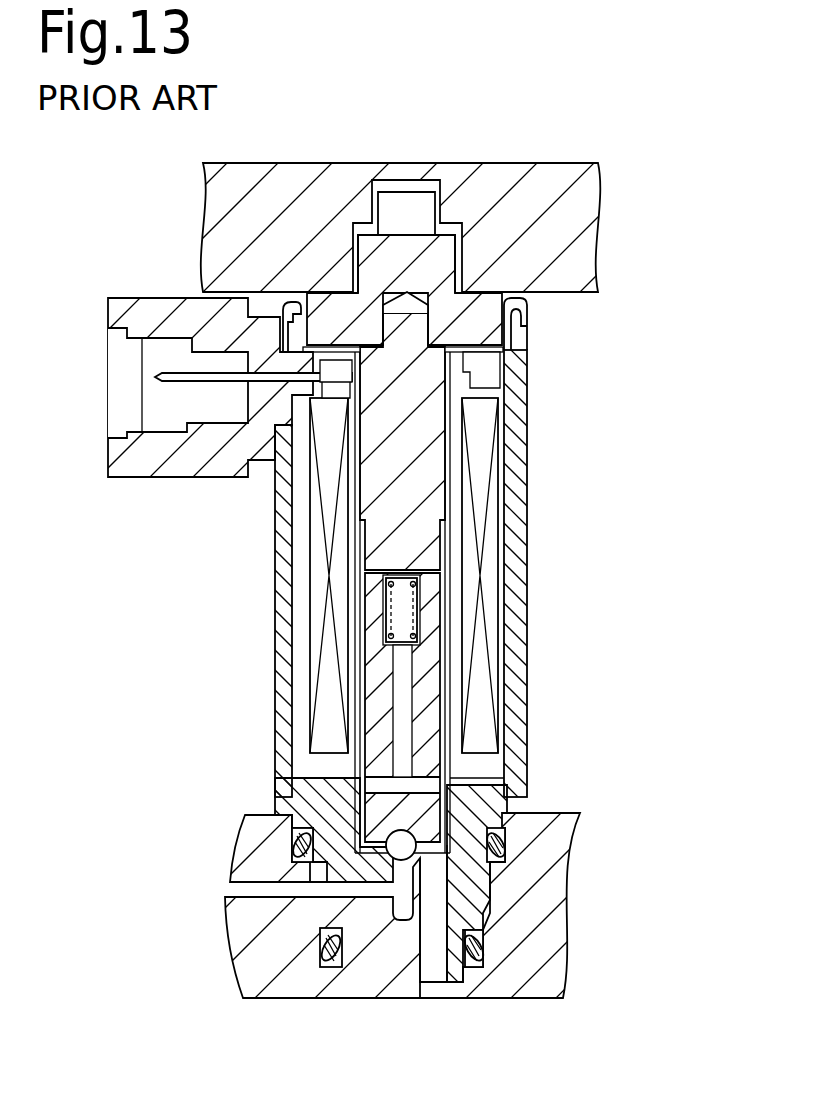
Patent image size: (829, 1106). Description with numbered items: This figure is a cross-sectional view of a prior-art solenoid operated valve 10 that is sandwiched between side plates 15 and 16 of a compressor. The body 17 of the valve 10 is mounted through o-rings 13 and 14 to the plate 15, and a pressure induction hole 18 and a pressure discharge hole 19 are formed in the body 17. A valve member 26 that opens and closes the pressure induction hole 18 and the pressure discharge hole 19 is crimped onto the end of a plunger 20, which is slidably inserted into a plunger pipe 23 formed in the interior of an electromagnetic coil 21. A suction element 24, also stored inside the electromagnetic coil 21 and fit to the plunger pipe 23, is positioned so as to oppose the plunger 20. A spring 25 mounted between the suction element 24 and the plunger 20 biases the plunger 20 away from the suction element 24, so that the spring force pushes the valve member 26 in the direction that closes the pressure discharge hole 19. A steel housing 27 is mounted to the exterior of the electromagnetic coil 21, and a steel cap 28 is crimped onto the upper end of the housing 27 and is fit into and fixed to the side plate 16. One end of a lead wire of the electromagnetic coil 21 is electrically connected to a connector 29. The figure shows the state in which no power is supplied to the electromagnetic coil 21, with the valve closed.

The solenoid operated valve 10 is at (618, 556).
The o-ring 13 is at (497, 840).
The o-ring 14 is at (475, 942).
The side plate 15 is at (500, 985).
The side plate 16 is at (535, 190).
The body 17 is at (388, 962).
The pressure induction hole 18 is at (431, 962).
The pressure discharge hole 19 is at (352, 888).
The plunger 20 is at (423, 708).
The electromagnetic coil 21 is at (325, 492).
The plunger pipe 23 is at (365, 725).
The suction element 24 is at (412, 385).
The spring 25 is at (415, 600).
The valve member 26 is at (388, 850).
The housing 27 is at (282, 690).
The cap 28 is at (403, 225).
The connector 29 is at (205, 372).